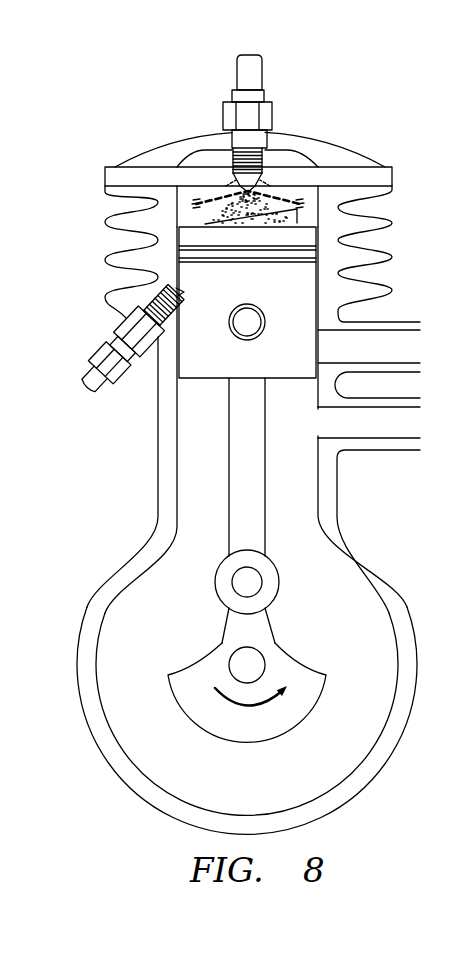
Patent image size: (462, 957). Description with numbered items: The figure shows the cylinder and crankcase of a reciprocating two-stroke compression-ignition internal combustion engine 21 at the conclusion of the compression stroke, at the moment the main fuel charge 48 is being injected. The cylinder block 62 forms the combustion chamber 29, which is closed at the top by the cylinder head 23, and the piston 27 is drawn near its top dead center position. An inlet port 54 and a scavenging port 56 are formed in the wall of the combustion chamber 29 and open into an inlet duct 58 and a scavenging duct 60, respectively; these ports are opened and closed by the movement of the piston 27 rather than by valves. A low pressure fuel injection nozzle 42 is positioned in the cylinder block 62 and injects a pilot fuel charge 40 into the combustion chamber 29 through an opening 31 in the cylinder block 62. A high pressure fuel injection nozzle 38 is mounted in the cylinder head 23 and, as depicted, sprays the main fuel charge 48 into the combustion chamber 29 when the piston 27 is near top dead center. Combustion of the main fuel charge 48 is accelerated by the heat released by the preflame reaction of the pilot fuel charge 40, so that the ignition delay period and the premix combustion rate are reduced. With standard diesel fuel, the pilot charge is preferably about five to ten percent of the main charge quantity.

The 2-stroke compression-ignition internal combustion engine 21 is at (121, 103).
The cylinder head 23 is at (366, 170).
The piston 27 is at (298, 307).
The combustion chamber 29 is at (187, 203).
The opening 31 is at (181, 294).
The high pressure fuel injection nozzle 38 is at (262, 140).
The pilot fuel charge 40 is at (242, 207).
The low pressure fuel injection nozzle 42 is at (120, 315).
The main fuel charge 48 is at (215, 200).
The inlet port 54 is at (327, 420).
The scavenging port 56 is at (323, 345).
The inlet duct 58 is at (415, 433).
The scavenging duct 60 is at (417, 357).
The cylinder block 62 is at (390, 222).